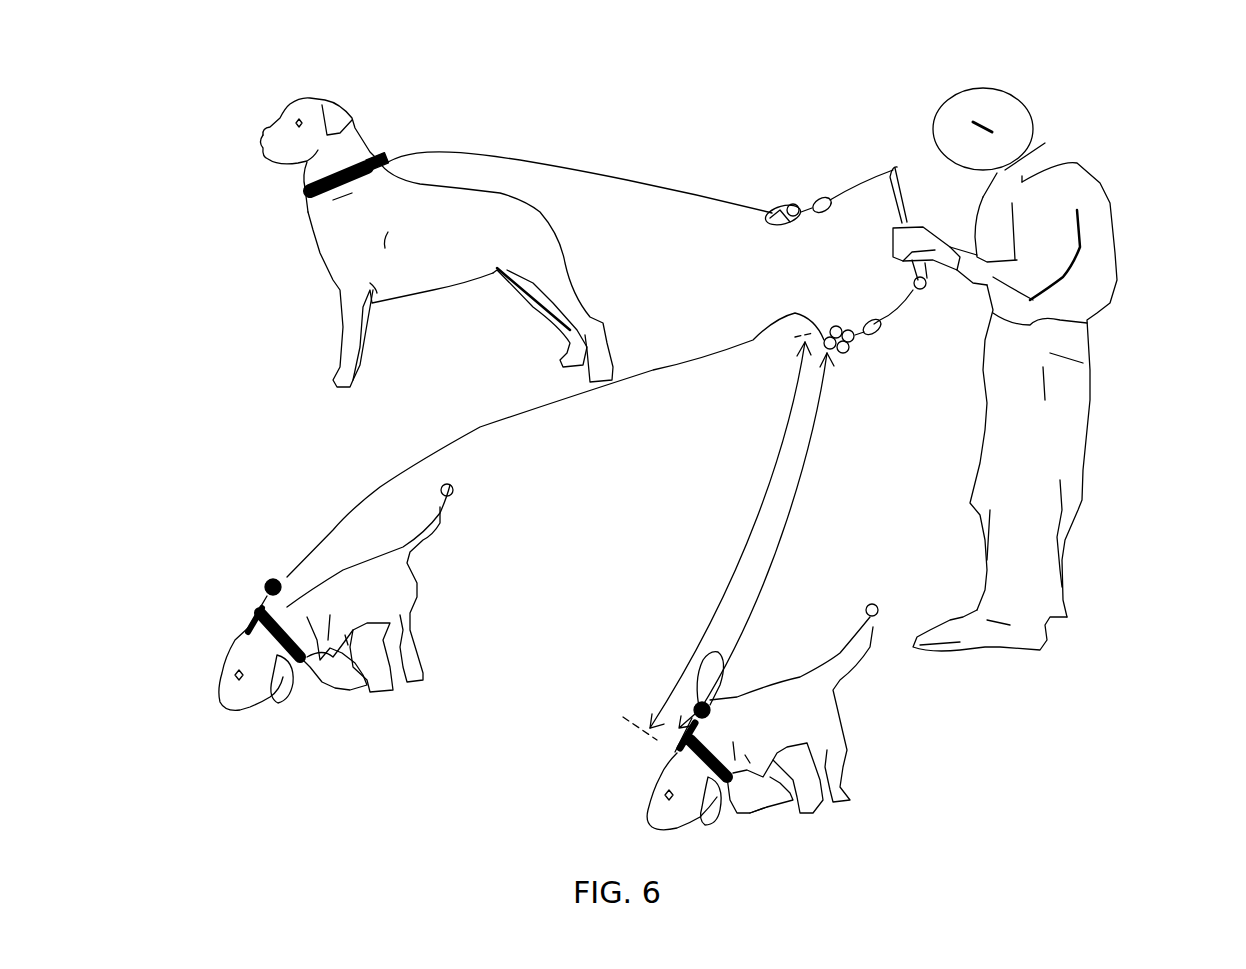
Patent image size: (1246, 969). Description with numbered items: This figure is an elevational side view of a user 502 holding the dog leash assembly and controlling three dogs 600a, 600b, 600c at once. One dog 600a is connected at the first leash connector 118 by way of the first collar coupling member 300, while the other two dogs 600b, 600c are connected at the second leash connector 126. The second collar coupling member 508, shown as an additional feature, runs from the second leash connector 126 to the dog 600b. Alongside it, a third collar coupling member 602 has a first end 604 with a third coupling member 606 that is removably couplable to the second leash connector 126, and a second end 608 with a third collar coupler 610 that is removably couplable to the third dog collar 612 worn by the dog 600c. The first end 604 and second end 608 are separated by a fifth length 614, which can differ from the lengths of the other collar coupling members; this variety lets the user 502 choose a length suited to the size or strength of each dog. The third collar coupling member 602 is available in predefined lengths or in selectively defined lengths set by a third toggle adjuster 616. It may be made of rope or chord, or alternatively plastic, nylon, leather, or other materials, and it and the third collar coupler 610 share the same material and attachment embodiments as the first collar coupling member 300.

The first collar coupling member 300 is at (675, 185).
The first leash connector 118 is at (820, 203).
The user 502 is at (1097, 227).
The third collar coupling member 602 is at (790, 507).
The second leash connector 126 is at (835, 352).
The third coupling member 606 is at (835, 360).
The first end 604 is at (805, 355).
The fifth length 614 is at (713, 617).
The third toggle adjuster 616 is at (760, 677).
The second end 608 is at (683, 713).
The third collar coupler 610 is at (677, 742).
The third dog collar 612 is at (763, 810).
The second collar coupling member 508 is at (317, 533).
The dog 600a is at (478, 252).
The dog 600b is at (384, 613).
The dog 600c is at (808, 735).